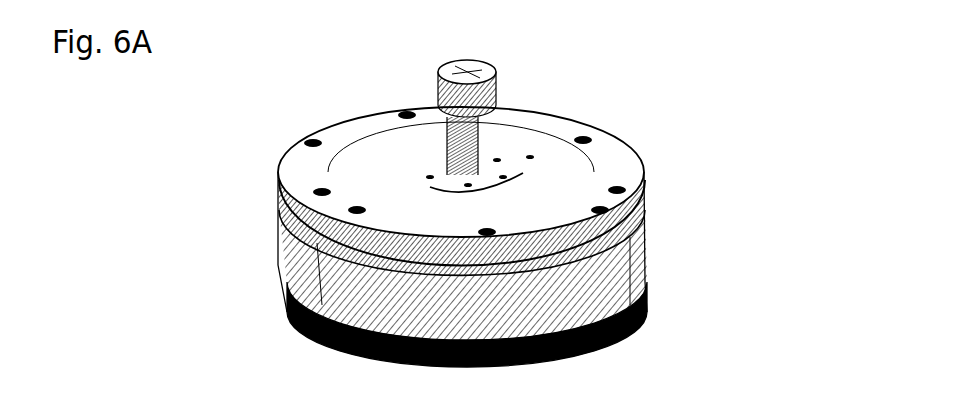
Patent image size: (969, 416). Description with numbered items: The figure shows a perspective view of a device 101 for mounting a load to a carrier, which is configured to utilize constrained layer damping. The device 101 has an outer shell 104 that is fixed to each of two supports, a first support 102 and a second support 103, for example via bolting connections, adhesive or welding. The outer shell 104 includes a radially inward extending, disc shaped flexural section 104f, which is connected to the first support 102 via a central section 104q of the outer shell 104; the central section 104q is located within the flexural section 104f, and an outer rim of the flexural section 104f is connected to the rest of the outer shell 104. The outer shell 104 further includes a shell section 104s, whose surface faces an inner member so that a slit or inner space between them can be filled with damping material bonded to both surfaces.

The device for mounting a load to a carrier 101 is at (694, 305).
The first support 102 is at (478, 93).
The second support 103 is at (277, 312).
The outer shell 104 is at (674, 252).
The flexural section 104f is at (537, 168).
The central section 104q is at (425, 158).
The shell section 104s is at (273, 265).